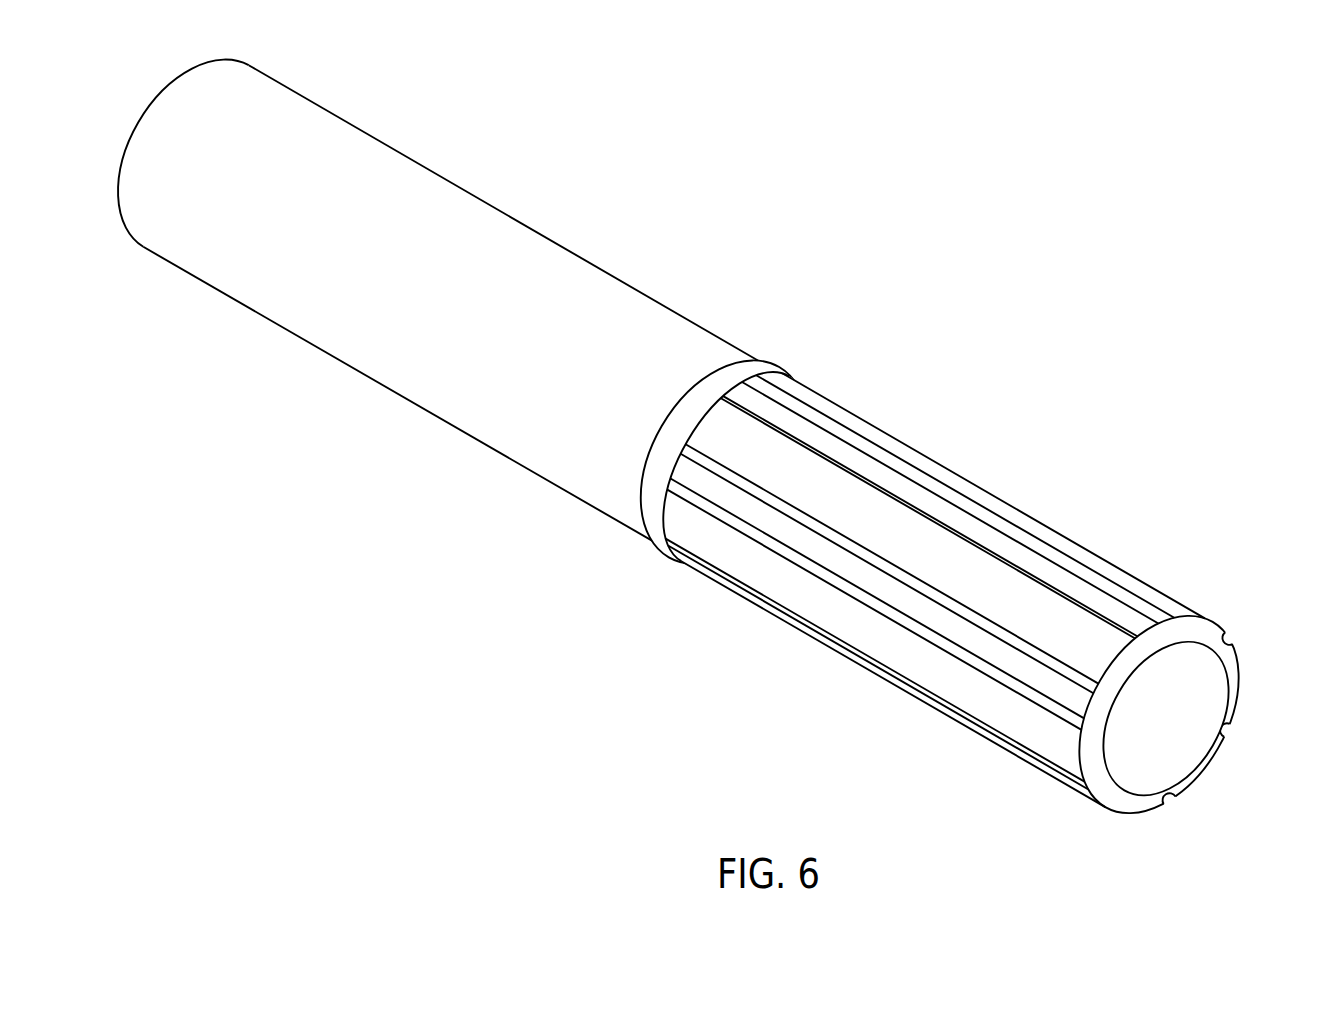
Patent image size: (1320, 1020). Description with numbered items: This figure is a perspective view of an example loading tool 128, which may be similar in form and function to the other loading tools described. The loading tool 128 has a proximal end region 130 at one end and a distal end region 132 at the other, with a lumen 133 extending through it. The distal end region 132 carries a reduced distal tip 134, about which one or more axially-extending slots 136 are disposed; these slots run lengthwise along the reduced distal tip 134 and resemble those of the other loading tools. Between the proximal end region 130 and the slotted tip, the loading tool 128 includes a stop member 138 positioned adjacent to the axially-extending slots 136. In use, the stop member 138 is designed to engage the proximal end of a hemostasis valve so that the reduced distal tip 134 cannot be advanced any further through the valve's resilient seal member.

The loading tool 128 is at (702, 451).
The proximal end region 130 is at (417, 373).
The distal end region 132 is at (978, 700).
The lumen 133 is at (1162, 735).
The reduced distal tip 134 is at (998, 484).
The axially-extending slots 136 is at (1127, 615).
The stop member 138 is at (652, 503).